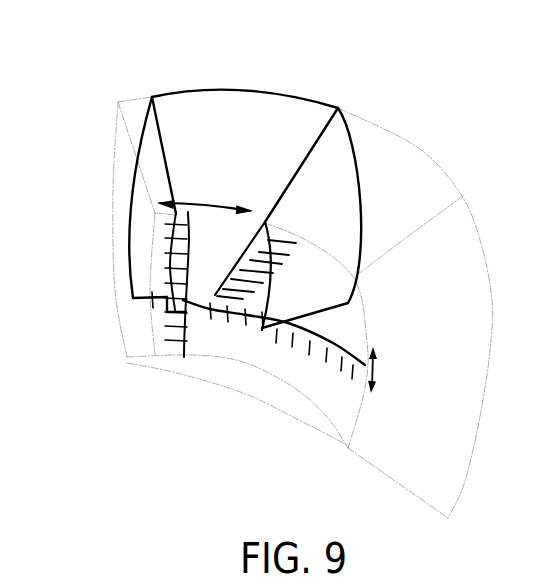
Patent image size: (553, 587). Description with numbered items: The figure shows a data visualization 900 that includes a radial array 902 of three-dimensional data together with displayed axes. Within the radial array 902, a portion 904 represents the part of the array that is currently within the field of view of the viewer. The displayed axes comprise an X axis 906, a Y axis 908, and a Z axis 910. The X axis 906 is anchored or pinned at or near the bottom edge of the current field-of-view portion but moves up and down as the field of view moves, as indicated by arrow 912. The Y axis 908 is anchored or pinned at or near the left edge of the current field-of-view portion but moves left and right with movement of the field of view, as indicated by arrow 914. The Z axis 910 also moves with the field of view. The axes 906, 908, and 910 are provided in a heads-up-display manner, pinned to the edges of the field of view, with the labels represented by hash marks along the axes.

The data visualization 900 is at (105, 78).
The radial array 902 is at (493, 200).
The portion 904 is at (338, 108).
The X axis 906 is at (327, 343).
The Y axis 908 is at (188, 332).
The Z axis 910 is at (296, 213).
The arrow 912 is at (374, 367).
The arrow 914 is at (207, 203).